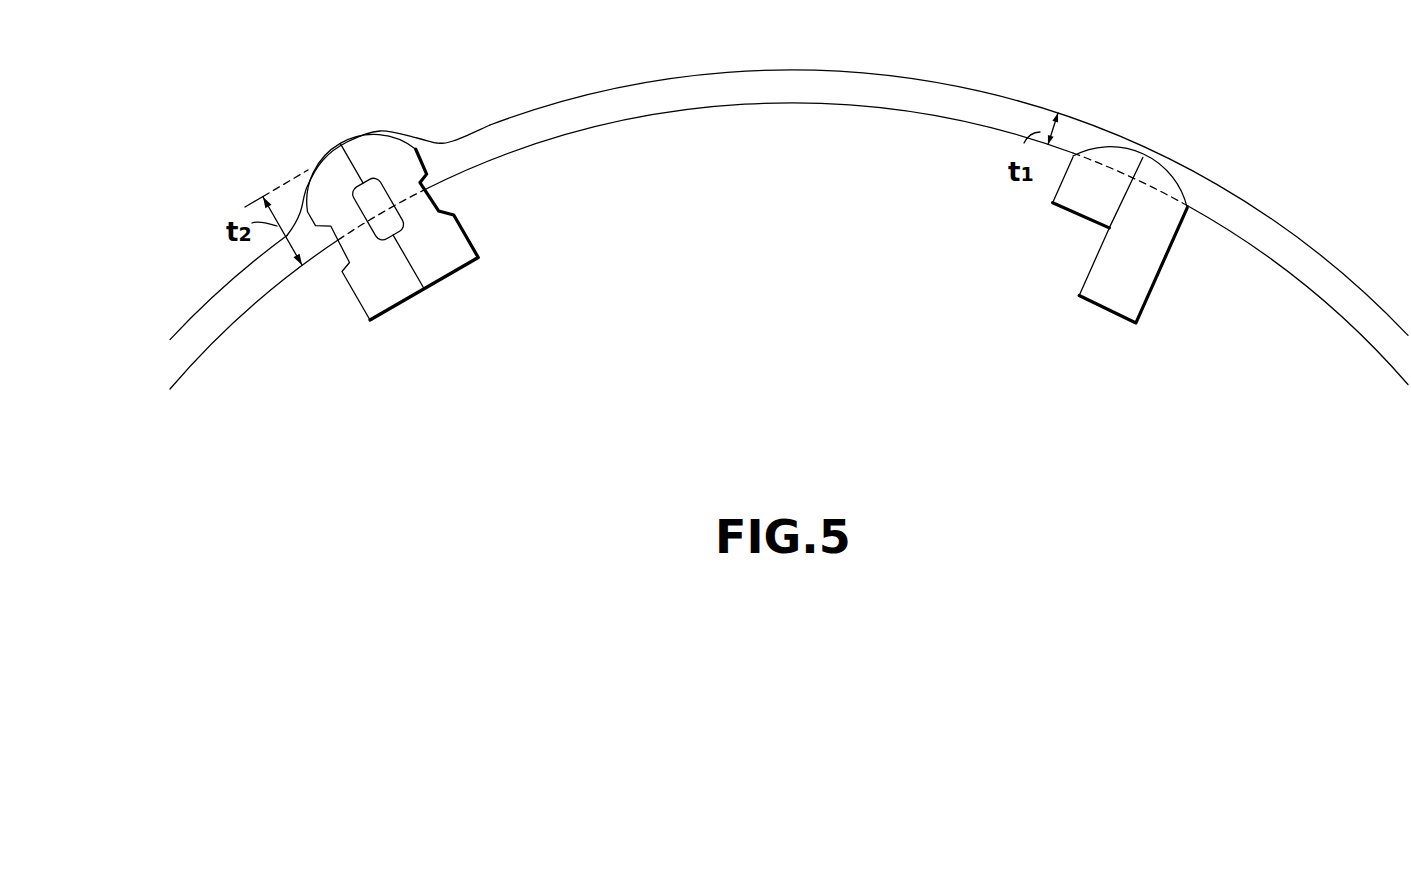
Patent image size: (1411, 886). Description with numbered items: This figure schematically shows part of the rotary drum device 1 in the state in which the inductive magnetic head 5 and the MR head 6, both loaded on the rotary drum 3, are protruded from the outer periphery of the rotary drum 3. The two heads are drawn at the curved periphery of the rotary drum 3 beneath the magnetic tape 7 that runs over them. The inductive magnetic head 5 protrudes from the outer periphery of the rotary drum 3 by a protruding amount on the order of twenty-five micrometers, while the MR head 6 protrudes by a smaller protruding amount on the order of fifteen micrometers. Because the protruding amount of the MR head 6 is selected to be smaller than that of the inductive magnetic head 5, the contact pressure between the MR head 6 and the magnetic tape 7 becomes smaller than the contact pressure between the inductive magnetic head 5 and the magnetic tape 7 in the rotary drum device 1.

The rotary drum device 1 is at (789, 201).
The rotary drum 3 is at (1275, 308).
The inductive magnetic head 5 is at (440, 263).
The MR head 6 is at (1107, 289).
The magnetic tape 7 is at (962, 88).